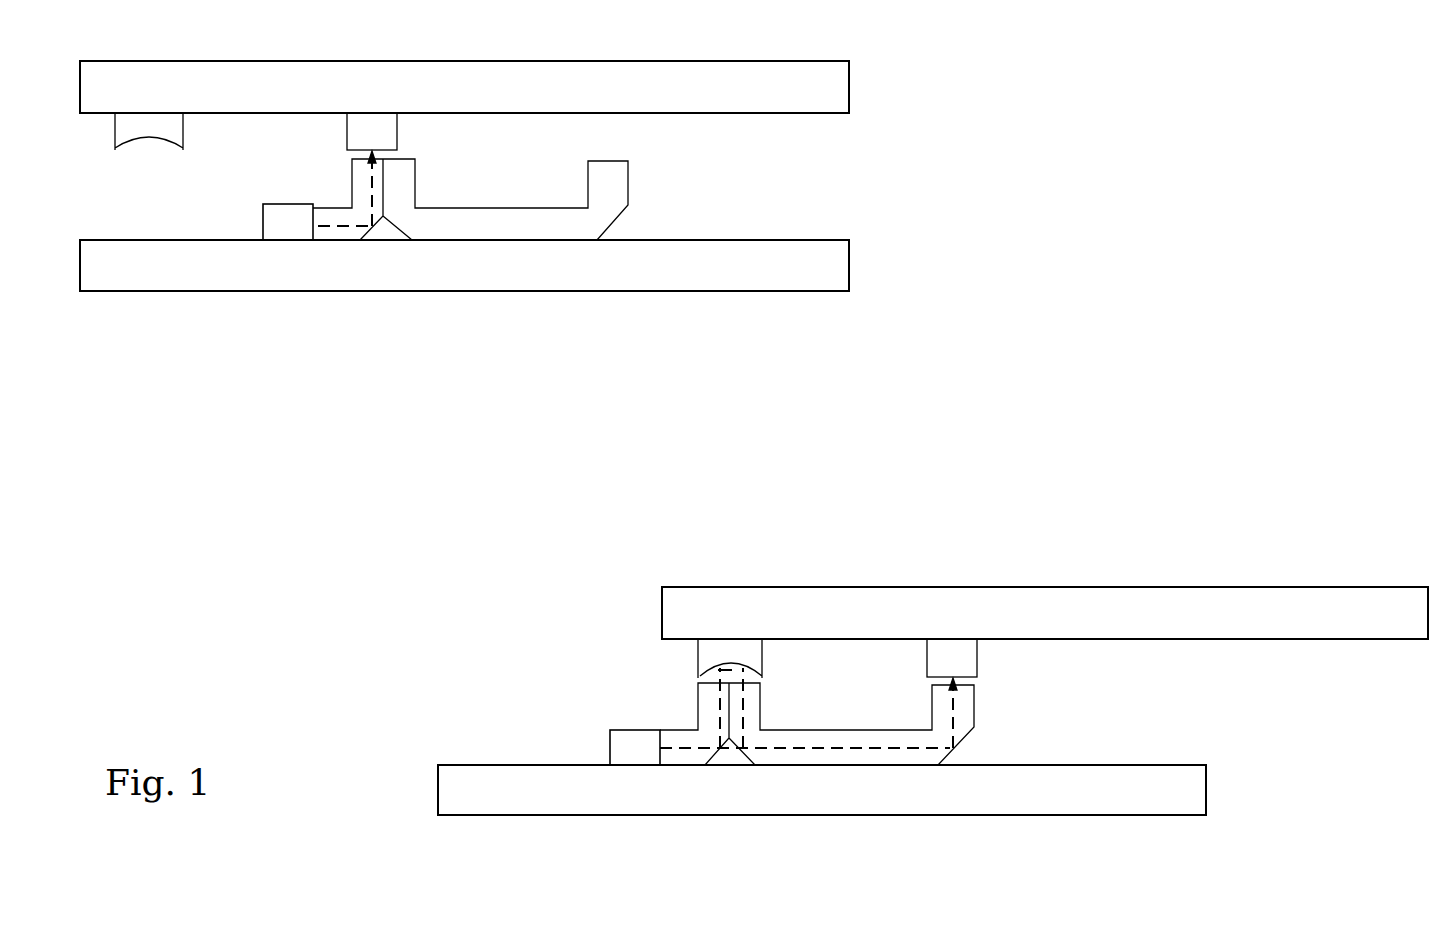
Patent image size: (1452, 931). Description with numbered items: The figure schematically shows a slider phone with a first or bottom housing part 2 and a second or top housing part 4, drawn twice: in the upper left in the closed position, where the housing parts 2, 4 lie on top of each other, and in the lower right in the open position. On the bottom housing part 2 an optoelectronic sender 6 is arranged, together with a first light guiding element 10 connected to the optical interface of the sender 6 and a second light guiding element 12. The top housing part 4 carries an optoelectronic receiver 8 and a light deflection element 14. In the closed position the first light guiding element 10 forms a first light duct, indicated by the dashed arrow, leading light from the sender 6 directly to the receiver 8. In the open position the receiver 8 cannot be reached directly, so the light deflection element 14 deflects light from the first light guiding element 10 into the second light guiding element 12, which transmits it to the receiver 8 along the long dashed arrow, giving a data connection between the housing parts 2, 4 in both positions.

The bottom housing part 2 is at (835, 264).
The top housing part 4 is at (828, 87).
The optoelectronic sender 6 is at (280, 228).
The optoelectronic receiver 8 is at (357, 128).
The first light guiding element 10 is at (345, 232).
The second light guiding element 12 is at (612, 191).
The light deflection element 14 is at (147, 126).